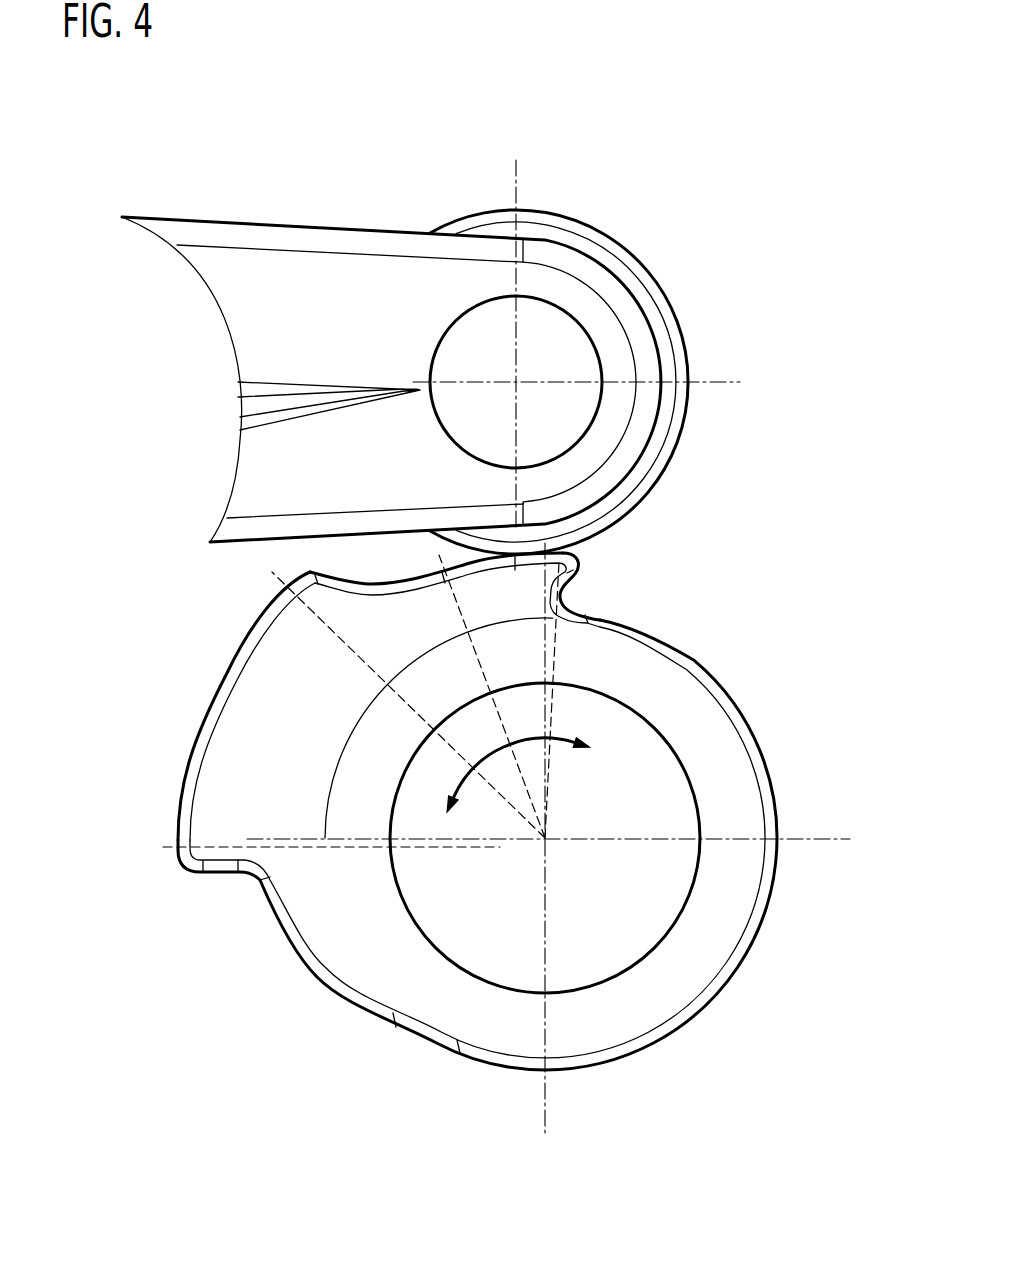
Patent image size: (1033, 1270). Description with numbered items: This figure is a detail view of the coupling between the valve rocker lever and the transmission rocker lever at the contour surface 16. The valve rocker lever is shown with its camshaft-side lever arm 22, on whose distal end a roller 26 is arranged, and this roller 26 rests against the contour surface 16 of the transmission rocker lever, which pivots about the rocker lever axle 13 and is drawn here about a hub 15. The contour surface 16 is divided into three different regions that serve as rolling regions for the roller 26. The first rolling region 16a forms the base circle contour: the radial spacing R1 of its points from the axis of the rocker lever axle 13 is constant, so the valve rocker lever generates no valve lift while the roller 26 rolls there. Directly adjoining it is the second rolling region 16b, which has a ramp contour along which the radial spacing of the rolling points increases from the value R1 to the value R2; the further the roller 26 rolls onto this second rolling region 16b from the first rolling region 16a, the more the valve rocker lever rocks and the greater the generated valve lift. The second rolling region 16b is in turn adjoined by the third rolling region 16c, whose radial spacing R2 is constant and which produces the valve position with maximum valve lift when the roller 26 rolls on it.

The camshaft-side lever arm 22 is at (365, 343).
The roller 26 is at (667, 293).
The contour surface 16 is at (435, 754).
The first rolling region 16a is at (511, 572).
The second rolling region 16b is at (369, 565).
The third rolling region 16c is at (190, 667).
The radial spacing R1 is at (553, 702).
The radial spacing R2 is at (360, 660).
The hub 15 is at (402, 907).
The rocker lever axle 13 is at (538, 832).